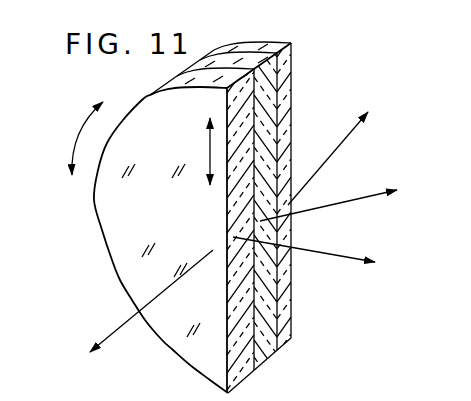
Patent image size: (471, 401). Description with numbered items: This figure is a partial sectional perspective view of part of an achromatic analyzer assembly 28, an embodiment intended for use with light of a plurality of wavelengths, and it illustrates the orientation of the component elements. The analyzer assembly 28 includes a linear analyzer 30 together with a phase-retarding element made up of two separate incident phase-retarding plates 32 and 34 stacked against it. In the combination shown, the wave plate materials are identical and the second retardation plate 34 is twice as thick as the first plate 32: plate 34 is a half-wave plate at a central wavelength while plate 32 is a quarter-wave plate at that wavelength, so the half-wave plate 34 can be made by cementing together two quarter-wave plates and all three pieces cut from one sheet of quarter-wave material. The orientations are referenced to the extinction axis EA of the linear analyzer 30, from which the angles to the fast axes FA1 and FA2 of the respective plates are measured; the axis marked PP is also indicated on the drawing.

The analyzer assembly 28 is at (100, 287).
The linear analyzer 30 is at (152, 91).
The first phase-retarding plate 32 is at (238, 46).
The second phase-retarding plate 34 is at (252, 62).
The polarization plane axis PP is at (208, 158).
The fast axis of first plate FA1 is at (343, 156).
The fast axis of second plate FA2 is at (343, 202).
The extinction axis EA is at (317, 255).